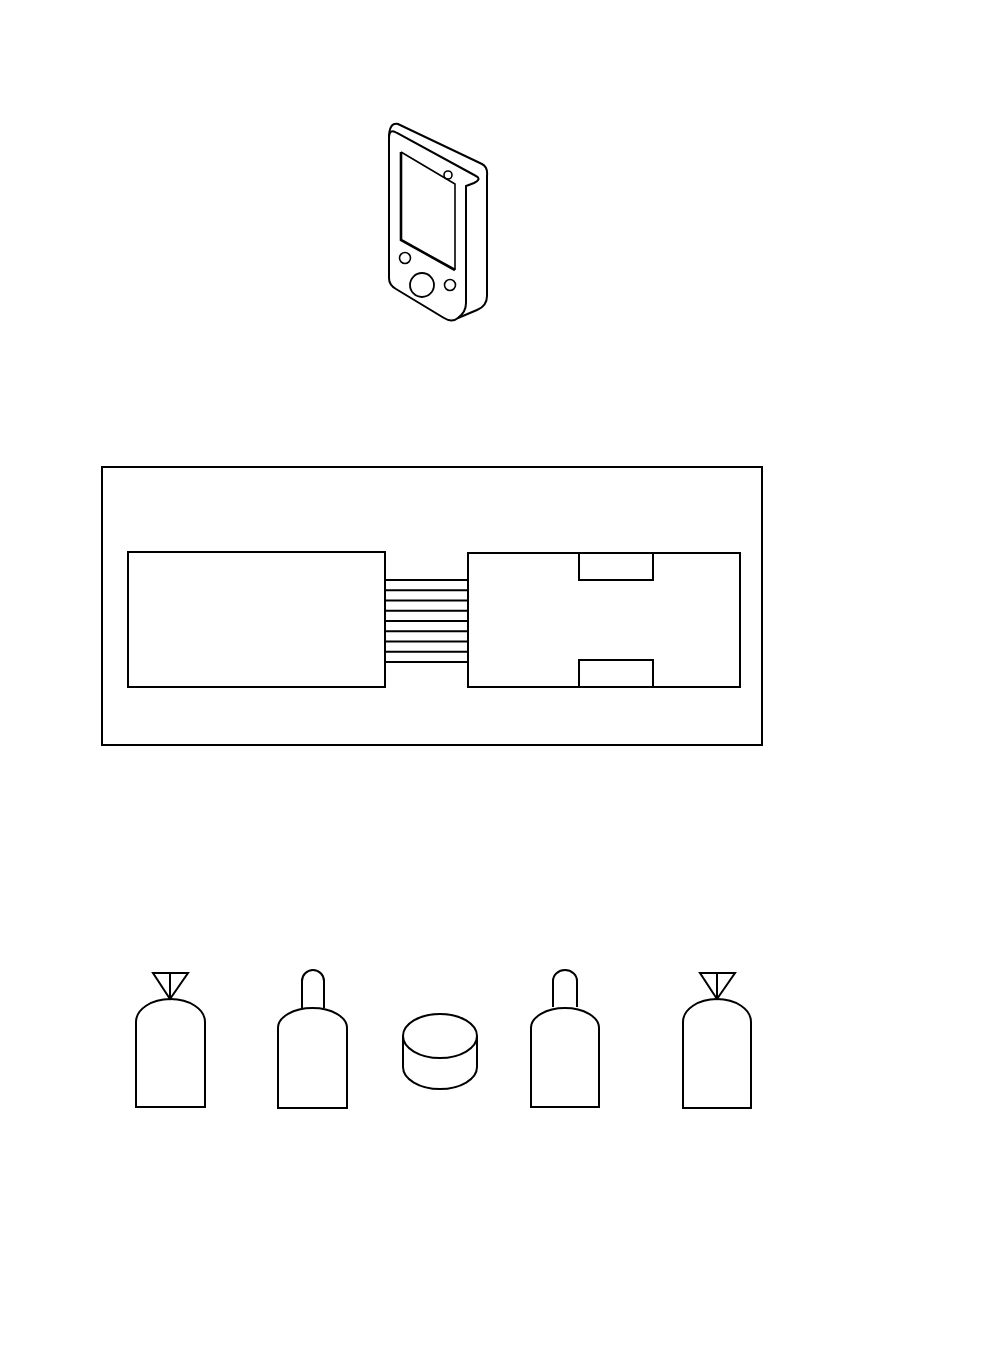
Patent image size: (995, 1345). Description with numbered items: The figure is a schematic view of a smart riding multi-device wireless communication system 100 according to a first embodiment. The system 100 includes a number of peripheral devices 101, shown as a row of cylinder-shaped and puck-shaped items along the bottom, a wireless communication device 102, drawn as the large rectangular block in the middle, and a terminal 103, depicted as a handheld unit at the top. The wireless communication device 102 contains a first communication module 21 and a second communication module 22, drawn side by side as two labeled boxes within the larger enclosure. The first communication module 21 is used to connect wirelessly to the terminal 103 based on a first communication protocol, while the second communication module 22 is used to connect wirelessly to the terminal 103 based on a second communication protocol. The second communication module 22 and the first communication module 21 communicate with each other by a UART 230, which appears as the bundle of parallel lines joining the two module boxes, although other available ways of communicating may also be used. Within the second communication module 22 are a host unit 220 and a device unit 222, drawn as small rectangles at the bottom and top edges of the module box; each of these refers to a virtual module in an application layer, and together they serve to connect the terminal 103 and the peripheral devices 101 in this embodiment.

The smart riding multi-device wireless communication system 100 is at (458, 41).
The peripheral devices 101 is at (441, 1020).
The wireless communication device 102 is at (717, 517).
The terminal 103 is at (452, 147).
The first communication module 21 is at (128, 654).
The second communication module 22 is at (723, 660).
The host unit 220 is at (618, 688).
The device unit 222 is at (612, 570).
The UART 230 is at (420, 663).